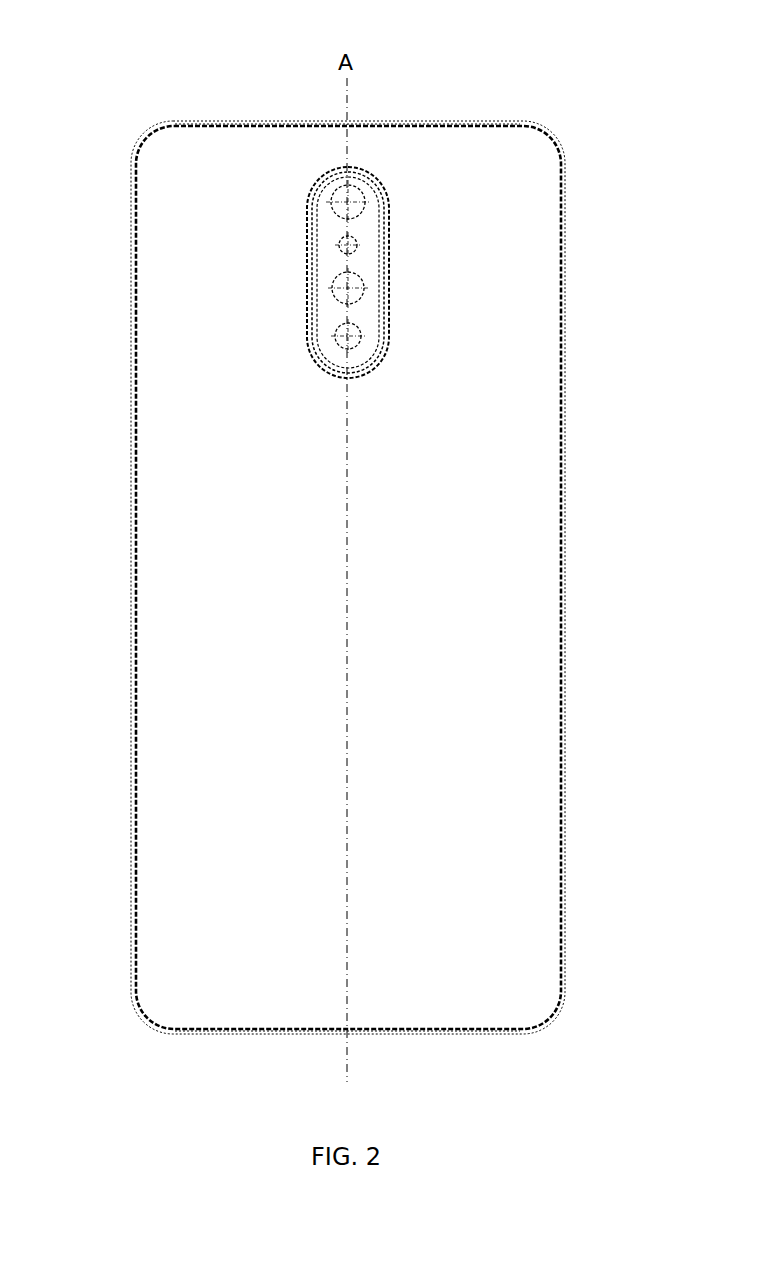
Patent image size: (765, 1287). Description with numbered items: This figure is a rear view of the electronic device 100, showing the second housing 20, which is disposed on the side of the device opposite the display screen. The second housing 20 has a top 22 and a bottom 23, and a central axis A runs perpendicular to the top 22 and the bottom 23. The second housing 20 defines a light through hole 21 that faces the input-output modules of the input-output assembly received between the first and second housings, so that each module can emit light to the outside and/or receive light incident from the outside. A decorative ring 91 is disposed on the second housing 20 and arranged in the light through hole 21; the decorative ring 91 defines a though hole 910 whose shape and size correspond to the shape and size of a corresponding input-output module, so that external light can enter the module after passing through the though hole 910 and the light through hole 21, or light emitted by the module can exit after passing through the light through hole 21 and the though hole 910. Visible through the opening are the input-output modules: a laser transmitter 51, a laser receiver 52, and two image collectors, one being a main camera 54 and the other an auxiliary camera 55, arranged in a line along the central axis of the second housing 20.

The electronic device 100 is at (77, 38).
The second housing 20 is at (512, 595).
The top 22 is at (452, 120).
The bottom 23 is at (450, 1038).
The light through hole 21 is at (307, 262).
The decorative ring 91 is at (310, 322).
The though hole 910 is at (334, 203).
The laser transmitter 51 is at (352, 202).
The auxiliary camera 55 is at (350, 246).
The main camera 54 is at (352, 290).
The laser receiver 52 is at (352, 338).